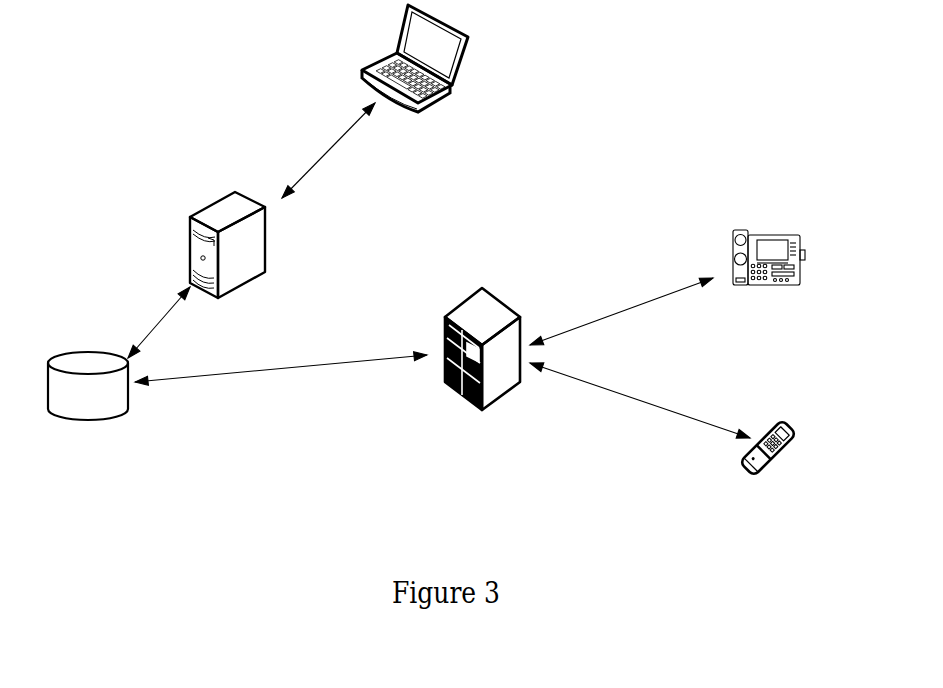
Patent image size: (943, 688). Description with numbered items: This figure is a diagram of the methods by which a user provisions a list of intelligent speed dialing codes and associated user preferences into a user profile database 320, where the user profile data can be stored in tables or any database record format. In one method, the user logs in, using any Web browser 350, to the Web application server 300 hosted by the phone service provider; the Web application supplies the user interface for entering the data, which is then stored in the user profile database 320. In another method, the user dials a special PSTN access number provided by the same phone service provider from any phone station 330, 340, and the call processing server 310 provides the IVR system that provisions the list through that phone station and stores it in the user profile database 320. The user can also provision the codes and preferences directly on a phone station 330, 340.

The Web application server 300 is at (231, 199).
The call processing server 310 is at (500, 321).
The user profile database 320 is at (117, 413).
The phone station 330 is at (788, 236).
The phone station 340 is at (792, 439).
The Web browser 350 is at (485, 73).